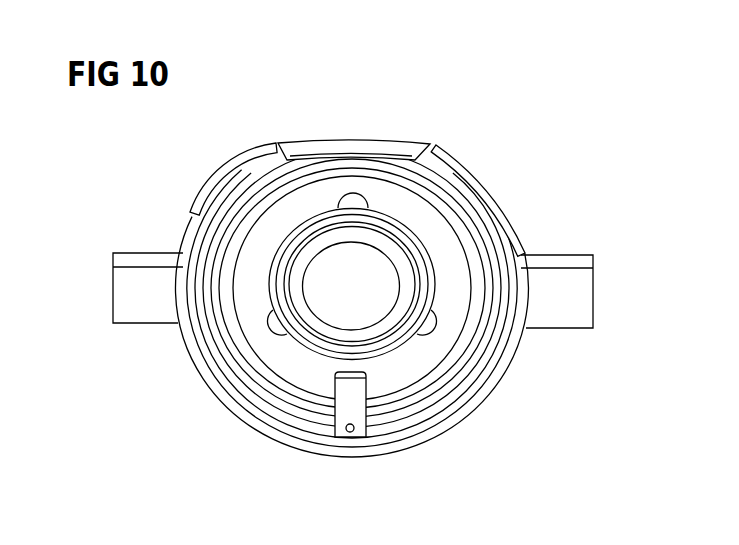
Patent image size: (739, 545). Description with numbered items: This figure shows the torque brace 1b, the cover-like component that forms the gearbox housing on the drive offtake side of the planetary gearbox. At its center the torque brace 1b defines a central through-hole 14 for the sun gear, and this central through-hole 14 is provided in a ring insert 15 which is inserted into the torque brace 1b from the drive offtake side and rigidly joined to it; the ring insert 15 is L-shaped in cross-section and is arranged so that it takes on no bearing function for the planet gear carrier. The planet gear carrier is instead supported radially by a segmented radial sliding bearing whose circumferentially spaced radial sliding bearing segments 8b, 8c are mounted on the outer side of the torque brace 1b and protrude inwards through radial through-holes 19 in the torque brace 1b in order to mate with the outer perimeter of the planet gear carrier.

The torque brace 1b is at (516, 142).
The radial sliding bearing segment 8b is at (247, 375).
The radial sliding bearing segment 8c is at (452, 377).
The central through-hole 14 is at (372, 265).
The ring insert 15 is at (331, 222).
The radial through-holes 19 is at (433, 145).